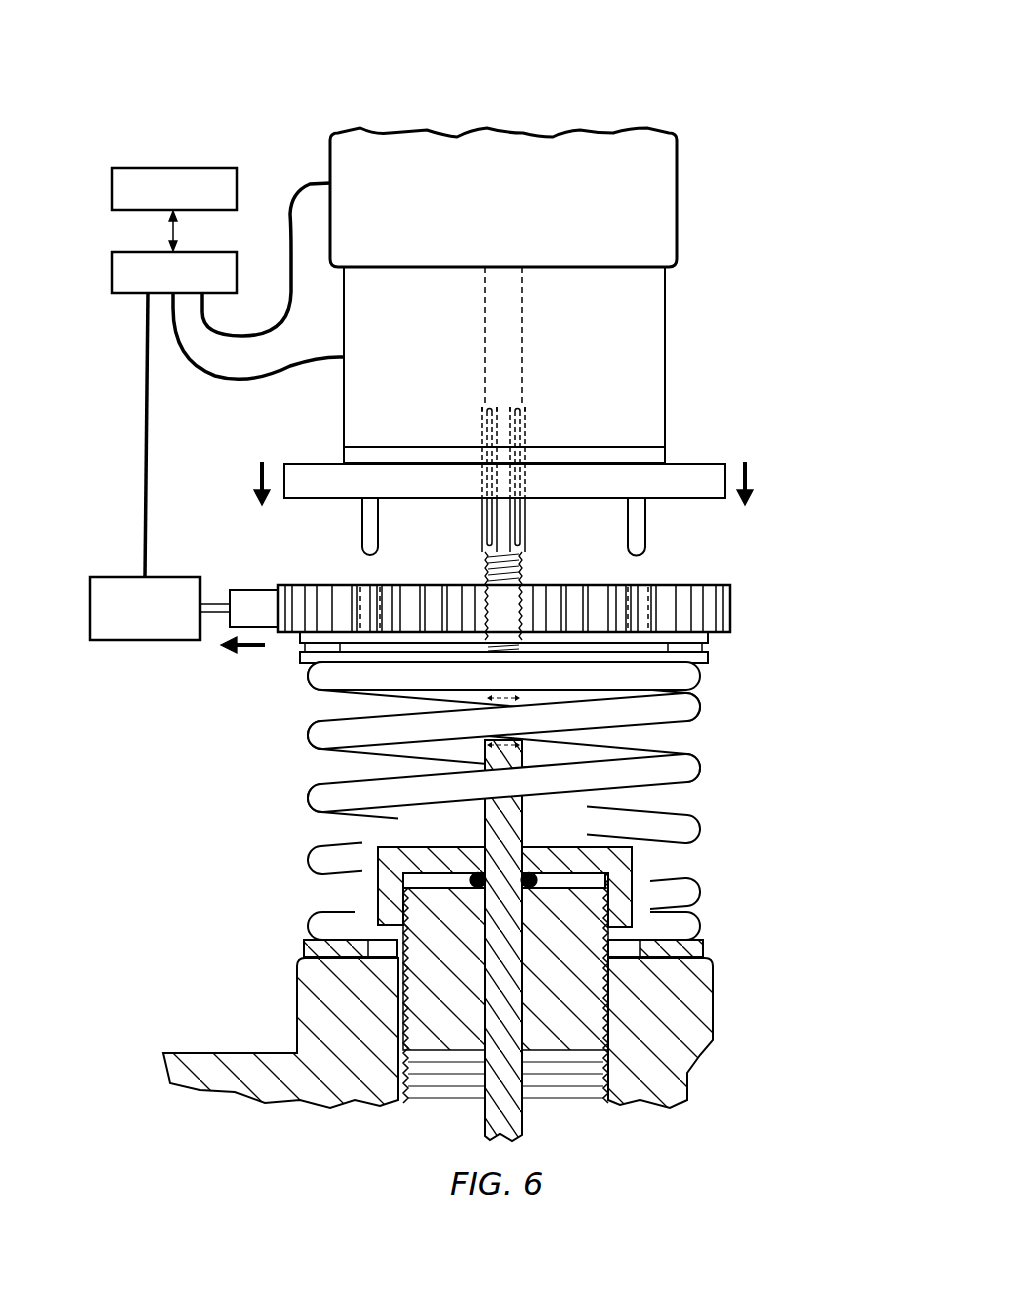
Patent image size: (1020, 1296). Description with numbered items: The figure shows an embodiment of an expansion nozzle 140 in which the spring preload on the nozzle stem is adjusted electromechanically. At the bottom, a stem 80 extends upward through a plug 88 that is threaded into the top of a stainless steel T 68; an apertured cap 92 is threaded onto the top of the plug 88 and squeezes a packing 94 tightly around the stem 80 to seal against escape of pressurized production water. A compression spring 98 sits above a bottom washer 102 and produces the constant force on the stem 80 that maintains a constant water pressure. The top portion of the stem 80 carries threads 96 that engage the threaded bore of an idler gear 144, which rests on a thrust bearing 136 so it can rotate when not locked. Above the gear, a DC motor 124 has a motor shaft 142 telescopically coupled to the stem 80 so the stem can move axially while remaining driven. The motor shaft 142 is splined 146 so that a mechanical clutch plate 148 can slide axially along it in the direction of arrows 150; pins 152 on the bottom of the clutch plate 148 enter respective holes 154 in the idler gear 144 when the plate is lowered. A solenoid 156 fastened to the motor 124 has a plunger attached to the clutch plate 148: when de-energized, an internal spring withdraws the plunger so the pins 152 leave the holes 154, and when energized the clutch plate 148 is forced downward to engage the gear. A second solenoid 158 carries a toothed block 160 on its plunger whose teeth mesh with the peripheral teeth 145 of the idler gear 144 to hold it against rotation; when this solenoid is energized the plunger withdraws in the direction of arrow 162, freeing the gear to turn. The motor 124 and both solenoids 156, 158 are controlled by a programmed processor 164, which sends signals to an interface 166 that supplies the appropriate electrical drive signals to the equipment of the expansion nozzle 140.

The expansion nozzle 140 is at (301, 78).
The DC motor 124 is at (678, 181).
The solenoid 156 is at (665, 334).
The motor shaft 142 is at (484, 343).
The clutch plate 148 is at (696, 463).
The arrows 150 is at (257, 477).
The pins 152 is at (645, 517).
The splines 146 is at (528, 519).
The threads 96 is at (522, 565).
The idler gear 144 is at (539, 581).
The holes 154 is at (643, 600).
The peripheral teeth 145 is at (707, 604).
The thrust bearing 136 is at (708, 637).
The compression spring 98 is at (537, 912).
The packing 94 is at (529, 872).
The cap 92 is at (632, 872).
The bottom washer 102 is at (703, 950).
The T 68 is at (713, 1020).
The plug 88 is at (408, 1005).
The stem 80 is at (522, 1118).
The processor 164 is at (112, 190).
The interface 166 is at (112, 274).
The second solenoid 158 is at (130, 642).
The toothed block 160 is at (256, 590).
The arrow 162 is at (250, 657).